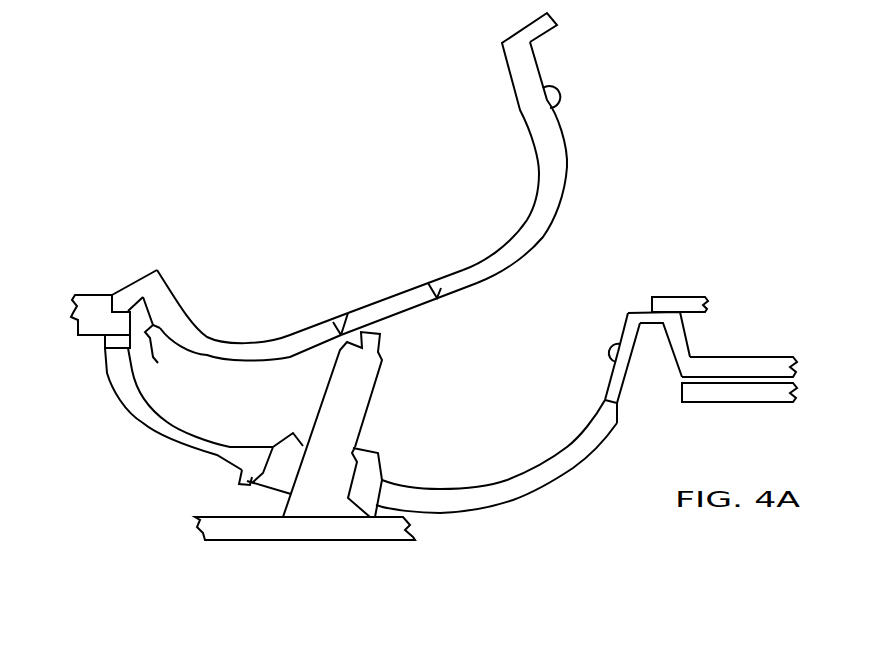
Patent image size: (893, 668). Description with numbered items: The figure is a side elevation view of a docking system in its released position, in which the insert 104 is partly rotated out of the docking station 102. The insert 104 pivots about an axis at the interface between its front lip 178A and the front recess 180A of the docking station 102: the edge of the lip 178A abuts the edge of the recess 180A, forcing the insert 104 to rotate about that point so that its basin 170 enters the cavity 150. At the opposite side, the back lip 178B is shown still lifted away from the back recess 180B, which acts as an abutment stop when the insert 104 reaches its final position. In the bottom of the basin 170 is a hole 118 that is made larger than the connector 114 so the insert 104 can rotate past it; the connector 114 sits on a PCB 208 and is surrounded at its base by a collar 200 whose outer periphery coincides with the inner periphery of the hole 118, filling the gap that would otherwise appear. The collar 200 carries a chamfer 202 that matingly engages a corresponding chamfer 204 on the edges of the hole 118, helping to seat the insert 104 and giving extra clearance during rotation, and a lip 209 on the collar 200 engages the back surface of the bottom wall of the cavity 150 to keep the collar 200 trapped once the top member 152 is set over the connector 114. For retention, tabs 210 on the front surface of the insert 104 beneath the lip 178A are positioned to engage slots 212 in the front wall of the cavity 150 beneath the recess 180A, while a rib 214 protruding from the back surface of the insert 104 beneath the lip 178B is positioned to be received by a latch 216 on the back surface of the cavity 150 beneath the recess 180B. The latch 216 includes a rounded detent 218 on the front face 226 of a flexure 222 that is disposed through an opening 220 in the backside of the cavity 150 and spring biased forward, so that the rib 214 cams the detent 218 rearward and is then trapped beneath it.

The docking station 102 is at (83, 296).
The front recess 180A is at (112, 296).
The front lip 178A is at (130, 300).
The insert 104 is at (190, 320).
The tabs 210 is at (148, 340).
The slots 212 is at (105, 343).
The collar 200 is at (278, 447).
The lip 209 is at (238, 478).
The chamfer 202 is at (284, 438).
The connector 114 is at (363, 387).
The PCB 208 is at (235, 532).
The cavity 150 is at (492, 482).
The chamfer 204 is at (348, 320).
The hole 118 is at (385, 307).
The basin 170 is at (478, 278).
The back lip 178B is at (547, 32).
The rib 214 is at (562, 97).
The latch 216 is at (605, 387).
The detent 218 is at (604, 348).
The opening 220 is at (625, 402).
The flexure 222 is at (672, 353).
The front face 226 is at (625, 327).
The back recess 180B is at (642, 302).
The top member 152 is at (673, 295).